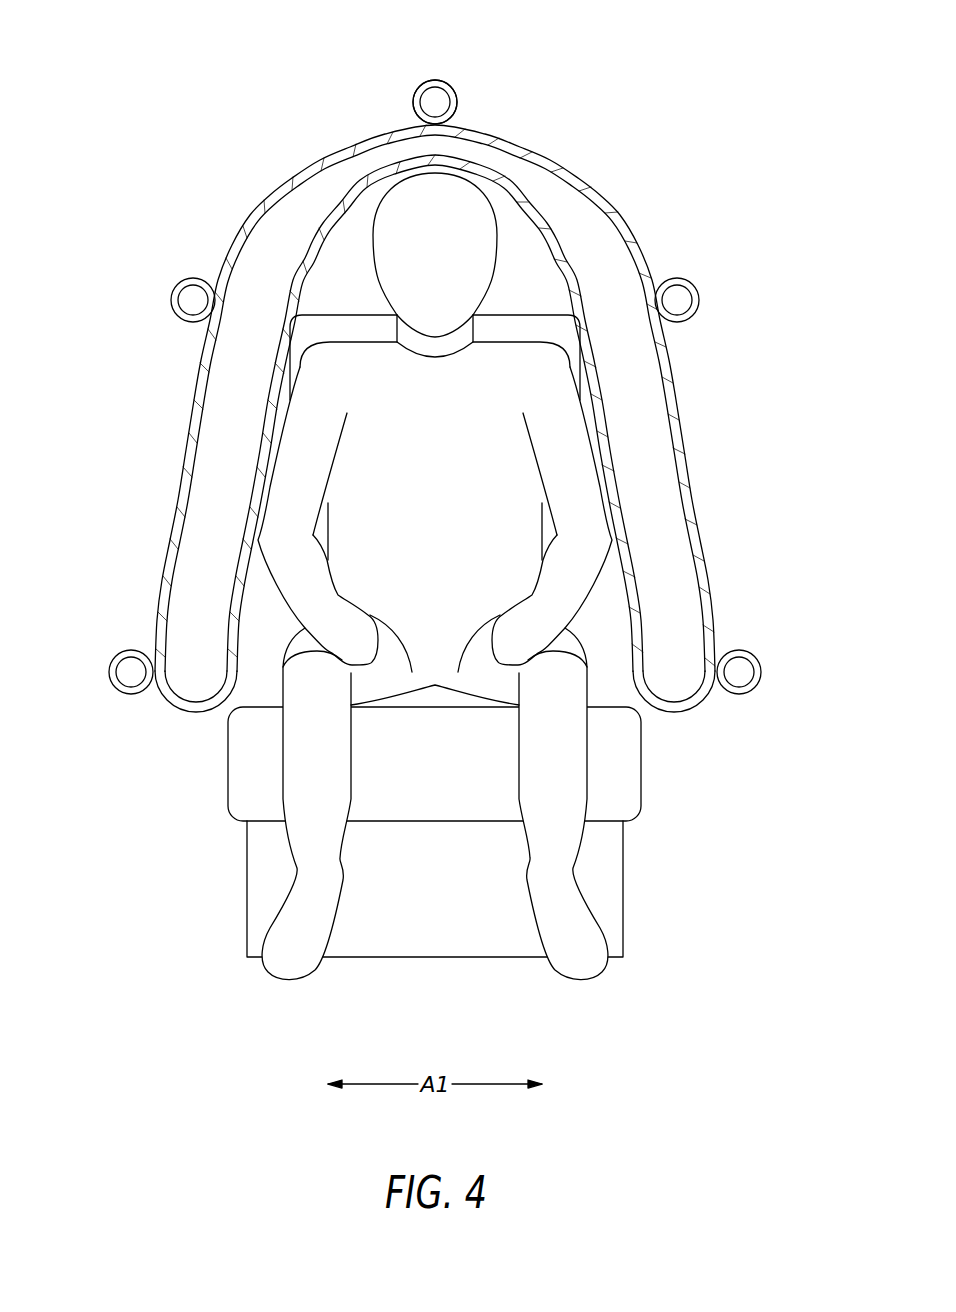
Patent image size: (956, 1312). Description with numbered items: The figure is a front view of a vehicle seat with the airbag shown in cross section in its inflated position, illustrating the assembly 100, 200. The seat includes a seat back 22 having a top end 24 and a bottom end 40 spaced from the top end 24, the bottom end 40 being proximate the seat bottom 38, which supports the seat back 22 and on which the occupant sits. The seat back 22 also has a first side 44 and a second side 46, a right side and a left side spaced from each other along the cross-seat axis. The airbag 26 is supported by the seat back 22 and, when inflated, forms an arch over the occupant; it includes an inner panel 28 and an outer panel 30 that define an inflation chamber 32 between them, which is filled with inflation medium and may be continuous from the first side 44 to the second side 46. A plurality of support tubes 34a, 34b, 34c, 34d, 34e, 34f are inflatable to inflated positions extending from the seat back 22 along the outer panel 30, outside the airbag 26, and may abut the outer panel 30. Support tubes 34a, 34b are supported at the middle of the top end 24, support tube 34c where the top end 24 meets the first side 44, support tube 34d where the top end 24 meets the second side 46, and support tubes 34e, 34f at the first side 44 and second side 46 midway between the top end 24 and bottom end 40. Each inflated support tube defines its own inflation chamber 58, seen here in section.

The assembly 100 is at (168, 118).
The assembly 200 is at (435, 403).
The seat back 22 is at (533, 327).
The top end 24 is at (355, 312).
The airbag 26 is at (600, 202).
The inner panel 28 is at (528, 198).
The outer panel 30 is at (573, 180).
The inflation chamber 32 is at (595, 250).
The support tube 34a is at (436, 80).
The support tube 34b is at (435, 102).
The support tube 34c is at (681, 280).
The support tube 34d is at (189, 280).
The support tube 34e is at (738, 652).
The support tube 34f is at (132, 652).
The inflation chamber 58 is at (430, 102).
The seat bottom 38 is at (620, 792).
The bottom end 40 is at (642, 720).
The first side 44 is at (643, 710).
The second side 46 is at (222, 712).